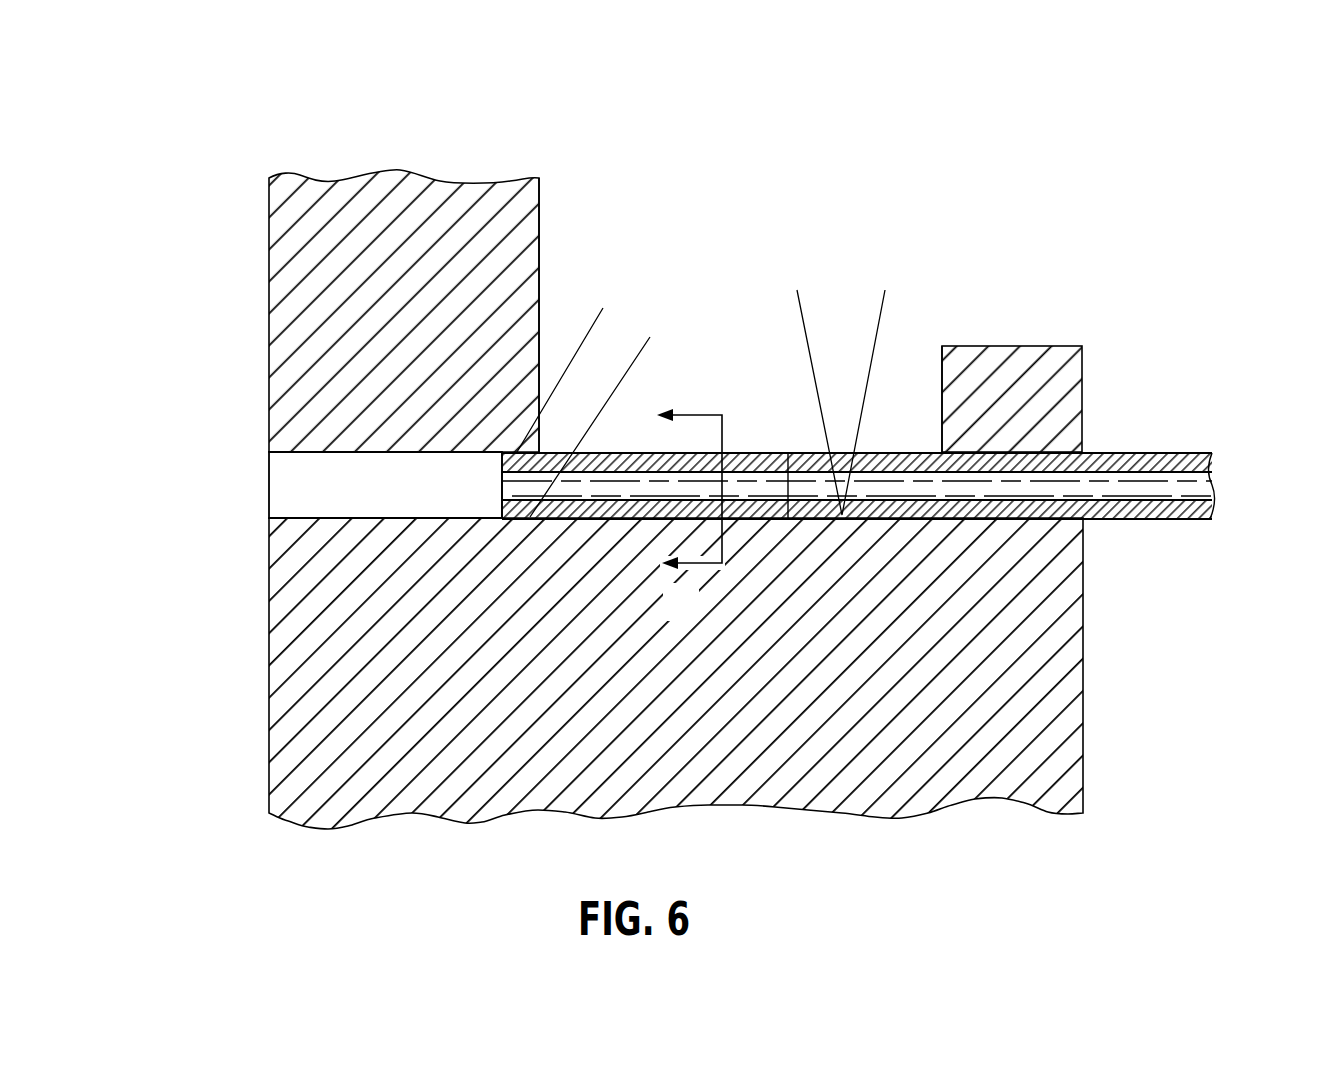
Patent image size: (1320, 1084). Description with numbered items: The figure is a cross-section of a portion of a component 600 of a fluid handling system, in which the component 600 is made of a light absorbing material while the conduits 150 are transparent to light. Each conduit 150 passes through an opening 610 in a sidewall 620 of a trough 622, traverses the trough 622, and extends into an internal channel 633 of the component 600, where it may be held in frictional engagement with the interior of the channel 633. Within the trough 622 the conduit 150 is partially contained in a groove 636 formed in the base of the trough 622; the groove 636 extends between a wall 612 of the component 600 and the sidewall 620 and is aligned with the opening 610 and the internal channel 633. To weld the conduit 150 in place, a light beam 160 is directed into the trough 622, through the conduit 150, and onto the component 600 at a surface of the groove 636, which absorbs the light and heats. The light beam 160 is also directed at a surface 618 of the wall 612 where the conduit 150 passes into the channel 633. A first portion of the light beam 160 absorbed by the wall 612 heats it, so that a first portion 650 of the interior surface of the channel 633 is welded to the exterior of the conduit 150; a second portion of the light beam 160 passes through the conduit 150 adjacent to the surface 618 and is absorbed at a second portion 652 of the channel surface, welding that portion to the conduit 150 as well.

The component 600 is at (580, 146).
The wall 612 is at (333, 180).
The surface 618 is at (540, 250).
The first portion of interior surface of channel 650 is at (530, 452).
The internal channel 633 is at (287, 517).
The second portion of interior surface of channel 652 is at (531, 522).
The groove 636 is at (788, 453).
The light beam 160 is at (653, 330).
The sidewall 620 is at (1038, 345).
The trough 622 is at (925, 352).
The opening 610 is at (1100, 452).
The conduit 150 is at (1183, 452).